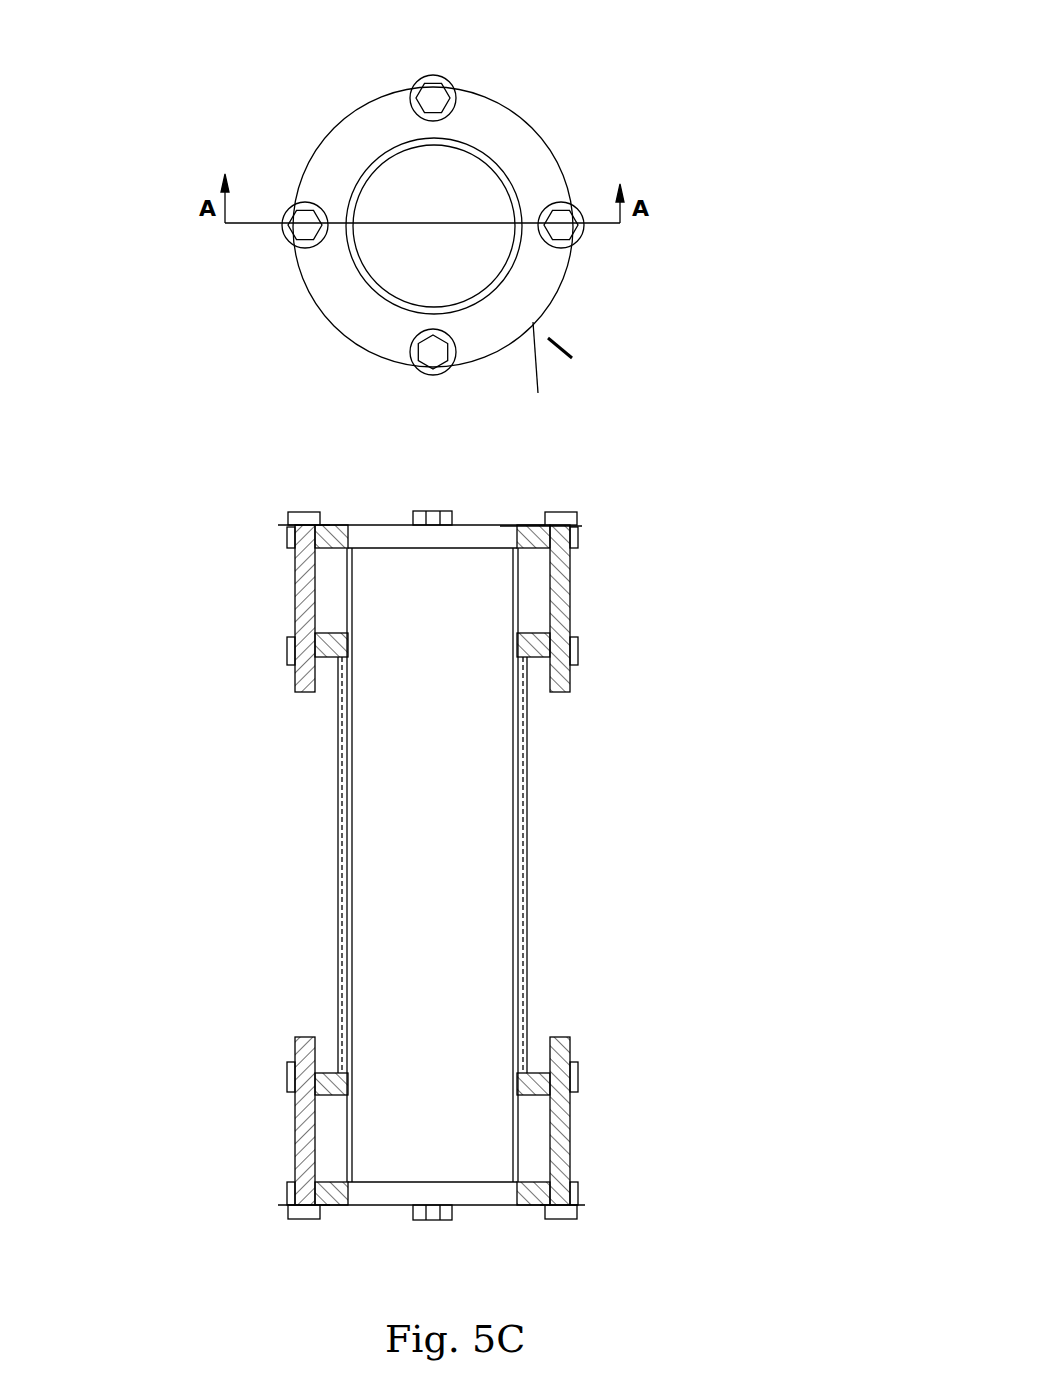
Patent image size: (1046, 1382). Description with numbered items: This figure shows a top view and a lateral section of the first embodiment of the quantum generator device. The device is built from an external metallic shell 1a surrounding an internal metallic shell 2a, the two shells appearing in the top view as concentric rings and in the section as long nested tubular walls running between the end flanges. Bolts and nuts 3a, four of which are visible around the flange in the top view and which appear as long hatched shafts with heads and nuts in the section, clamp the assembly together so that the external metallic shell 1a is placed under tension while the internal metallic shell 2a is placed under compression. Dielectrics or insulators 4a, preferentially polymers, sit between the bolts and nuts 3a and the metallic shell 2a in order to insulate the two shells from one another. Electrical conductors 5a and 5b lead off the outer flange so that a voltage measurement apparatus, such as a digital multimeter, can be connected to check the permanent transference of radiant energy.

The external metallic shell 1a is at (524, 898).
The internal metallic shell 2a is at (355, 296).
The bolts and nuts 3a is at (433, 97).
The dielectrics or insulators 4a is at (565, 210).
The electrical conductor 5a is at (548, 338).
The electrical conductor 5b is at (540, 386).